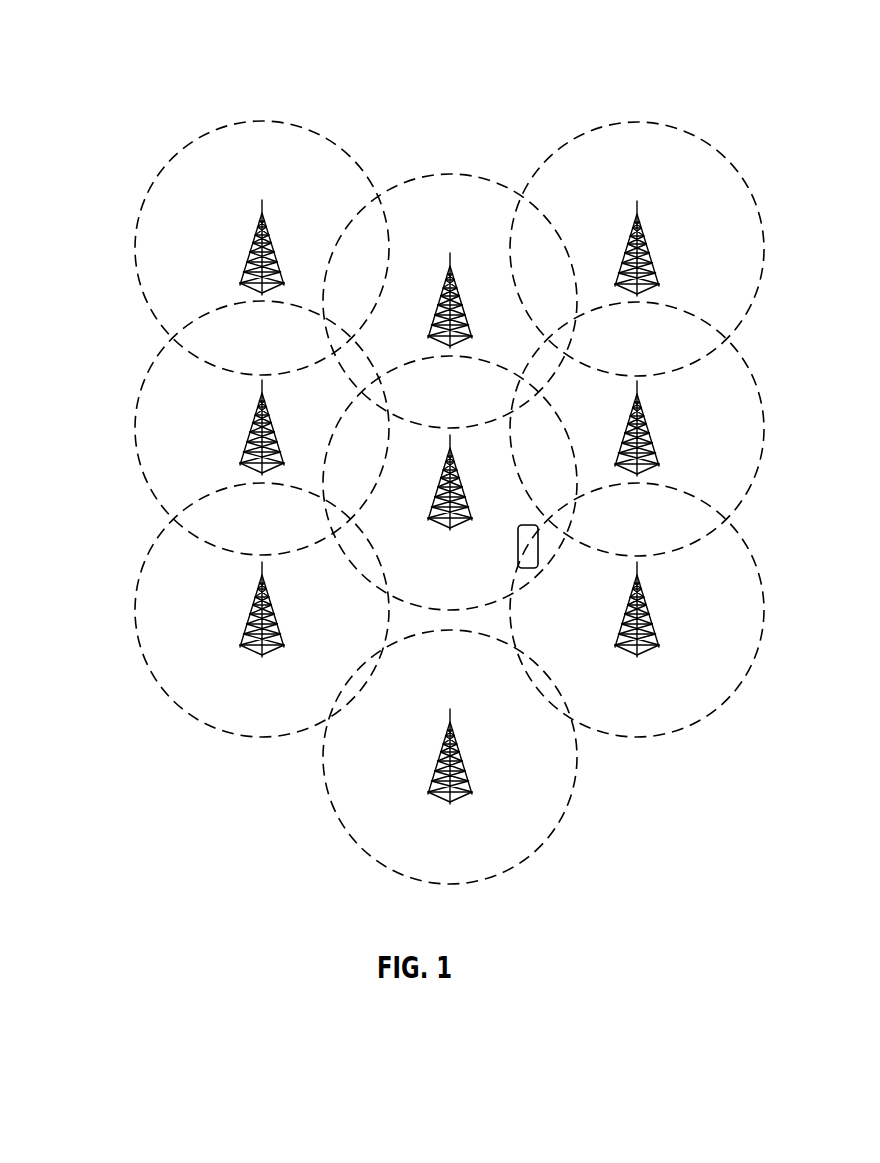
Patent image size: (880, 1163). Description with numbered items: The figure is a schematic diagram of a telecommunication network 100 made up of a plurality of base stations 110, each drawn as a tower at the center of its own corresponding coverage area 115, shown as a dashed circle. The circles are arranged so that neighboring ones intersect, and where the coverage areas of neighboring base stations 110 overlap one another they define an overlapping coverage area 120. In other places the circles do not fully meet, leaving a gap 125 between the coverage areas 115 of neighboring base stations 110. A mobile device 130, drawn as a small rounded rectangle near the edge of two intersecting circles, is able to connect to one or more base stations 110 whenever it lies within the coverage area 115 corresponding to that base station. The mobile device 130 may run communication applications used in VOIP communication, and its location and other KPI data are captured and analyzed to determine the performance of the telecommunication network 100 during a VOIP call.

The telecommunication network 100 is at (188, 37).
The base station 110 is at (259, 213).
The coverage area 115 is at (137, 237).
The overlapping coverage area 120 is at (207, 522).
The gap 125 is at (450, 616).
The mobile device 130 is at (539, 541).